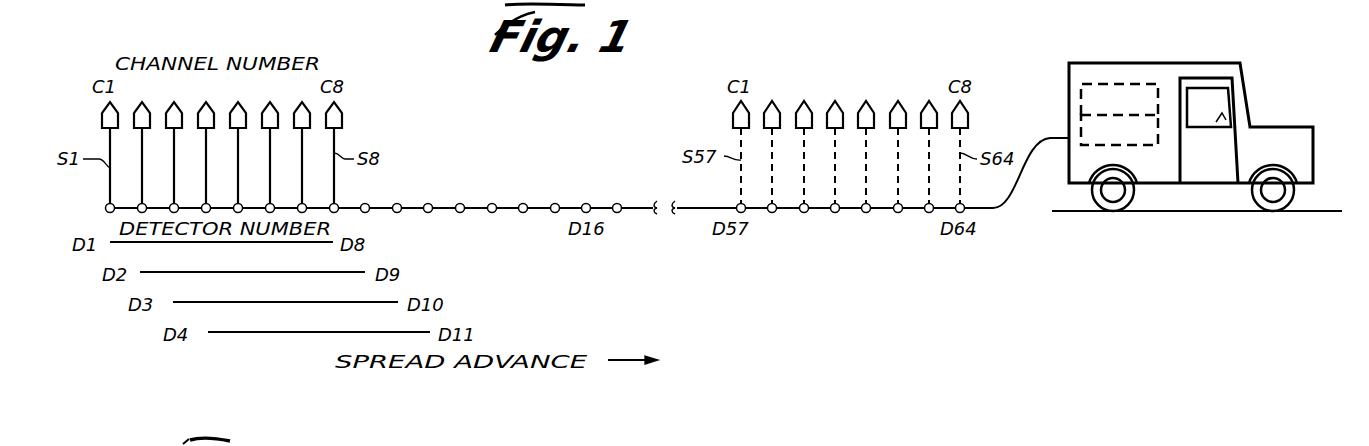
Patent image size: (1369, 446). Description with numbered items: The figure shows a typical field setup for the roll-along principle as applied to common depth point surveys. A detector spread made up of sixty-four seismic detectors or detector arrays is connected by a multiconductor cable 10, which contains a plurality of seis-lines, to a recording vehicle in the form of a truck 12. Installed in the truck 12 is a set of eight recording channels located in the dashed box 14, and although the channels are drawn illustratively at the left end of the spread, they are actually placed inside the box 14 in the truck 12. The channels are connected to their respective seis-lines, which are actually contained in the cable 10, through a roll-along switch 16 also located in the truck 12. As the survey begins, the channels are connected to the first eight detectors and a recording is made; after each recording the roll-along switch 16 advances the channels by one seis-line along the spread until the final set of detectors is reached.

The multiconductor cable 10 is at (478, 208).
The truck 12 is at (1230, 63).
The dashed box 14 is at (1090, 98).
The roll-along switch 16 is at (1090, 133).